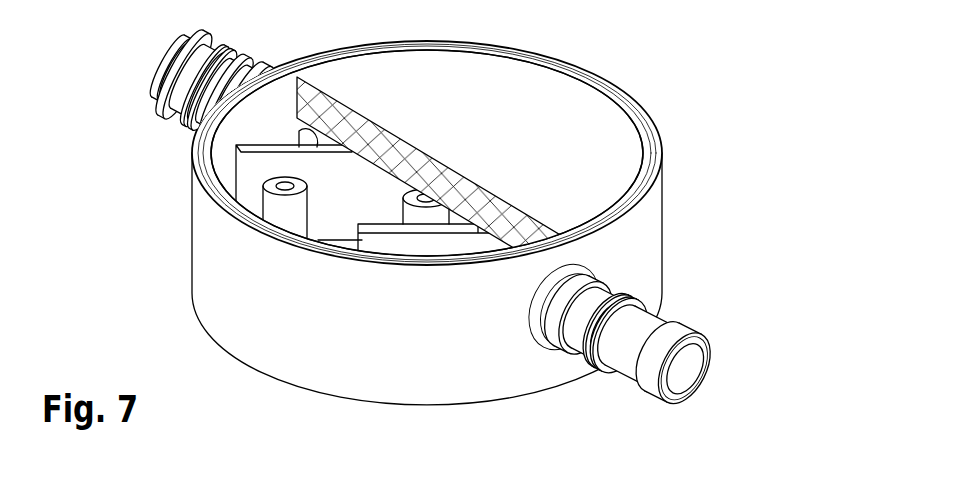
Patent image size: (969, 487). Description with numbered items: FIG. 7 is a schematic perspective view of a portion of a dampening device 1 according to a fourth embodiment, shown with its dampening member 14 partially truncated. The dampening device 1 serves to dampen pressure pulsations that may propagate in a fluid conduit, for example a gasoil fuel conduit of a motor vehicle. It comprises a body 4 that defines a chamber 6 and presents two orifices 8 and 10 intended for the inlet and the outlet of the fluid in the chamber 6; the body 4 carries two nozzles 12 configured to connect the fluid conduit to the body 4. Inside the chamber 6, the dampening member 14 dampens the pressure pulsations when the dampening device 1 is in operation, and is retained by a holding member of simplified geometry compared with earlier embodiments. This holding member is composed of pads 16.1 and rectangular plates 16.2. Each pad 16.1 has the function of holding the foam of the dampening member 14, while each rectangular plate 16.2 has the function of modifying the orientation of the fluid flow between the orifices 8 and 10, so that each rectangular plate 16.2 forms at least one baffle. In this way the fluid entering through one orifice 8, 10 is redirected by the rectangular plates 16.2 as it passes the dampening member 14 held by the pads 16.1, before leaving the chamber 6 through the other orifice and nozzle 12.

The dampening device 1 is at (411, 231).
The body 4 is at (253, 297).
The chamber 6 is at (366, 183).
The orifice 8 is at (292, 140).
The orifice 10 is at (575, 278).
The nozzle 12 is at (163, 57).
The dampening member 14 is at (324, 103).
The pad 16.1 is at (270, 203).
The rectangular plate 16.2 is at (248, 176).